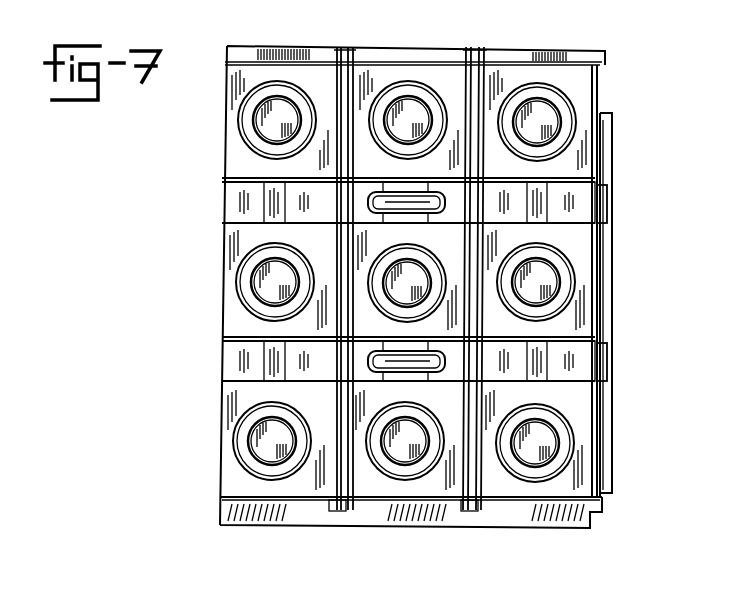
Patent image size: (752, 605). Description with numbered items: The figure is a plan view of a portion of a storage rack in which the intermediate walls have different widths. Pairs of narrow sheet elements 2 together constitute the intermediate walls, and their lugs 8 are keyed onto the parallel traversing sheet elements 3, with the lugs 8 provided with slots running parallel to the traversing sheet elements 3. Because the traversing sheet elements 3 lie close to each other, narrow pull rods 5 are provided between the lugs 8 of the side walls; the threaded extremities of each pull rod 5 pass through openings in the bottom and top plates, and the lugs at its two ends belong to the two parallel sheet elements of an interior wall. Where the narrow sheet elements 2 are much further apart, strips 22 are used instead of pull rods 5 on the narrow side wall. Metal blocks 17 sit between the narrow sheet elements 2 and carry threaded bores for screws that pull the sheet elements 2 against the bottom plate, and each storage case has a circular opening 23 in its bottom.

The narrow sheet element 2 is at (580, 383).
The traversing sheet element 3 is at (484, 82).
The pull rod 5 is at (470, 512).
The lug 8 is at (602, 178).
The metal block 17 is at (535, 350).
The strip 22 is at (604, 361).
The circular opening 23 is at (285, 92).